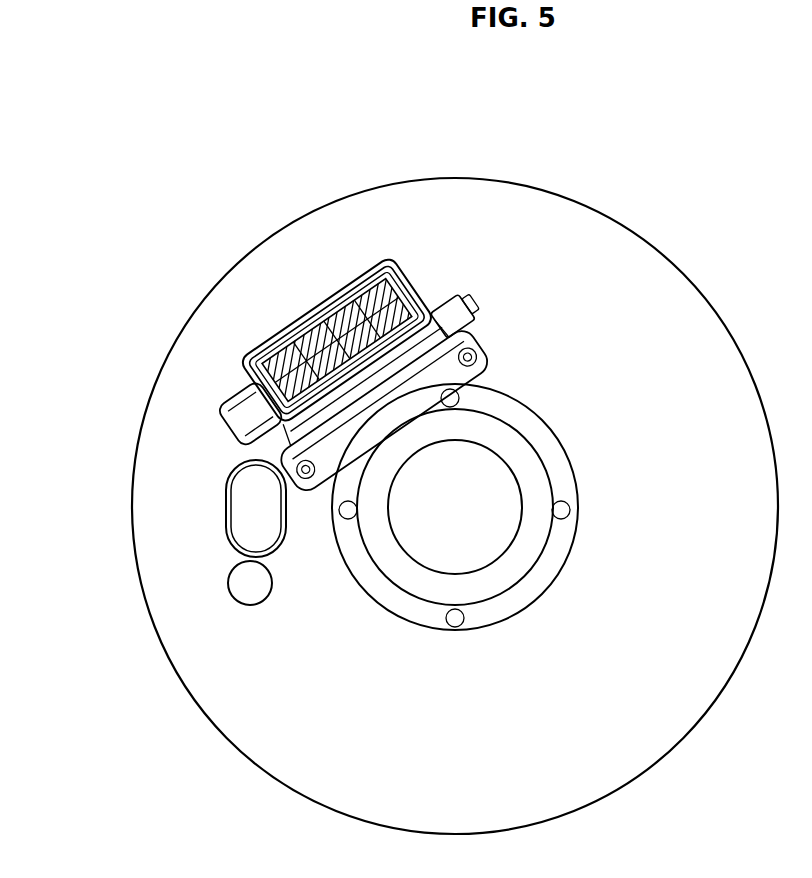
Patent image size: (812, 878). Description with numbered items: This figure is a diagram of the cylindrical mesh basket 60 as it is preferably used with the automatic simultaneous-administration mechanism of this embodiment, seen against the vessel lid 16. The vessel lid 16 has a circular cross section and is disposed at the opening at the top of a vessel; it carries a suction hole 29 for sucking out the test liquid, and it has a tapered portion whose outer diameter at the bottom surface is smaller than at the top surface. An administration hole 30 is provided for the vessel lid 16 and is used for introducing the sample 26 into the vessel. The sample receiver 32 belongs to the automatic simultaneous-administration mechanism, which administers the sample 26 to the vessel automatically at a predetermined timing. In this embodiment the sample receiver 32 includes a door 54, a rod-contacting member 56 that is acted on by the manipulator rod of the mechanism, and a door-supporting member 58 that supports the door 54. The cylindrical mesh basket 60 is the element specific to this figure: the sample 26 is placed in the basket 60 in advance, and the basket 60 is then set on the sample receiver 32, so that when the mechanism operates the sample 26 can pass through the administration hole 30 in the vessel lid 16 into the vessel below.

The vessel lid 16 is at (647, 305).
The suction hole 29 is at (236, 520).
The sample receiver 32 is at (380, 289).
The sample 26 is at (313, 303).
The cylindrical mesh basket 60 is at (365, 270).
The door 54 is at (300, 345).
The administration hole 30 is at (243, 358).
The rod-contacting member 56 is at (223, 417).
The door-supporting member 58 is at (470, 313).